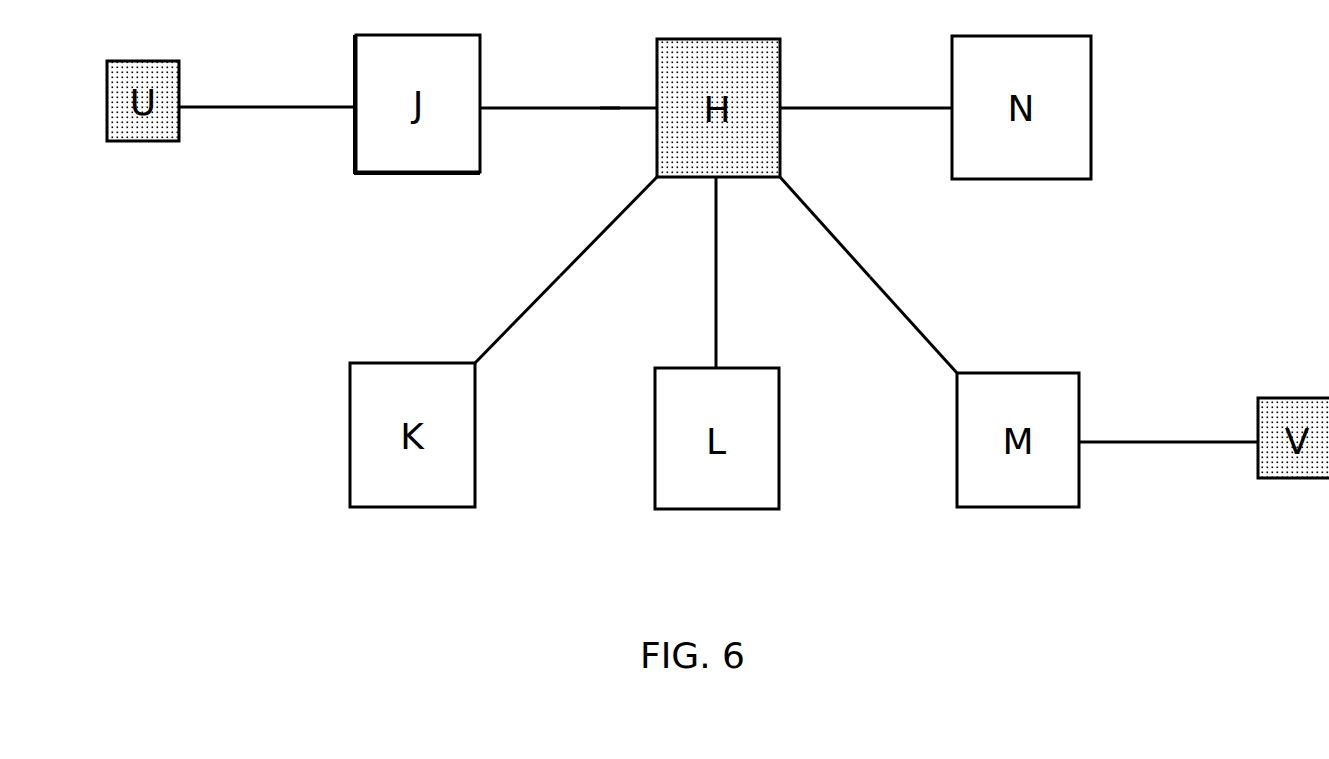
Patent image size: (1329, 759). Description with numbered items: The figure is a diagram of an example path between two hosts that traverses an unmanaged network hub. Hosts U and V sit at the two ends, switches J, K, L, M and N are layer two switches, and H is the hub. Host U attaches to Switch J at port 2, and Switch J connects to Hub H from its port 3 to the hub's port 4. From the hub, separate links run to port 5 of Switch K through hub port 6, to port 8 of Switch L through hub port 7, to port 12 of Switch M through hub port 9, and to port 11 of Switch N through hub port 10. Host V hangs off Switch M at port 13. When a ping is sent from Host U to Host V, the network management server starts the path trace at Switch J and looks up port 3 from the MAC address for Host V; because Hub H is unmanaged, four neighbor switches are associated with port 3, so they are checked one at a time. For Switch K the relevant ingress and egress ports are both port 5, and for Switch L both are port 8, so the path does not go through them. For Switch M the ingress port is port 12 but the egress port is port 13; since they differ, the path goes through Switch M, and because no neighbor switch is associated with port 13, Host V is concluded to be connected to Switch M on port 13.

The port 2 is at (267, 90).
The port 3 is at (550, 90).
The port 4 is at (628, 91).
The port 5 is at (508, 322).
The port 6 is at (608, 219).
The port 7 is at (726, 226).
The port 8 is at (726, 324).
The port 9 is at (825, 218).
The port 10 is at (820, 91).
The port 11 is at (906, 92).
The port 12 is at (923, 325).
The port 13 is at (1168, 425).